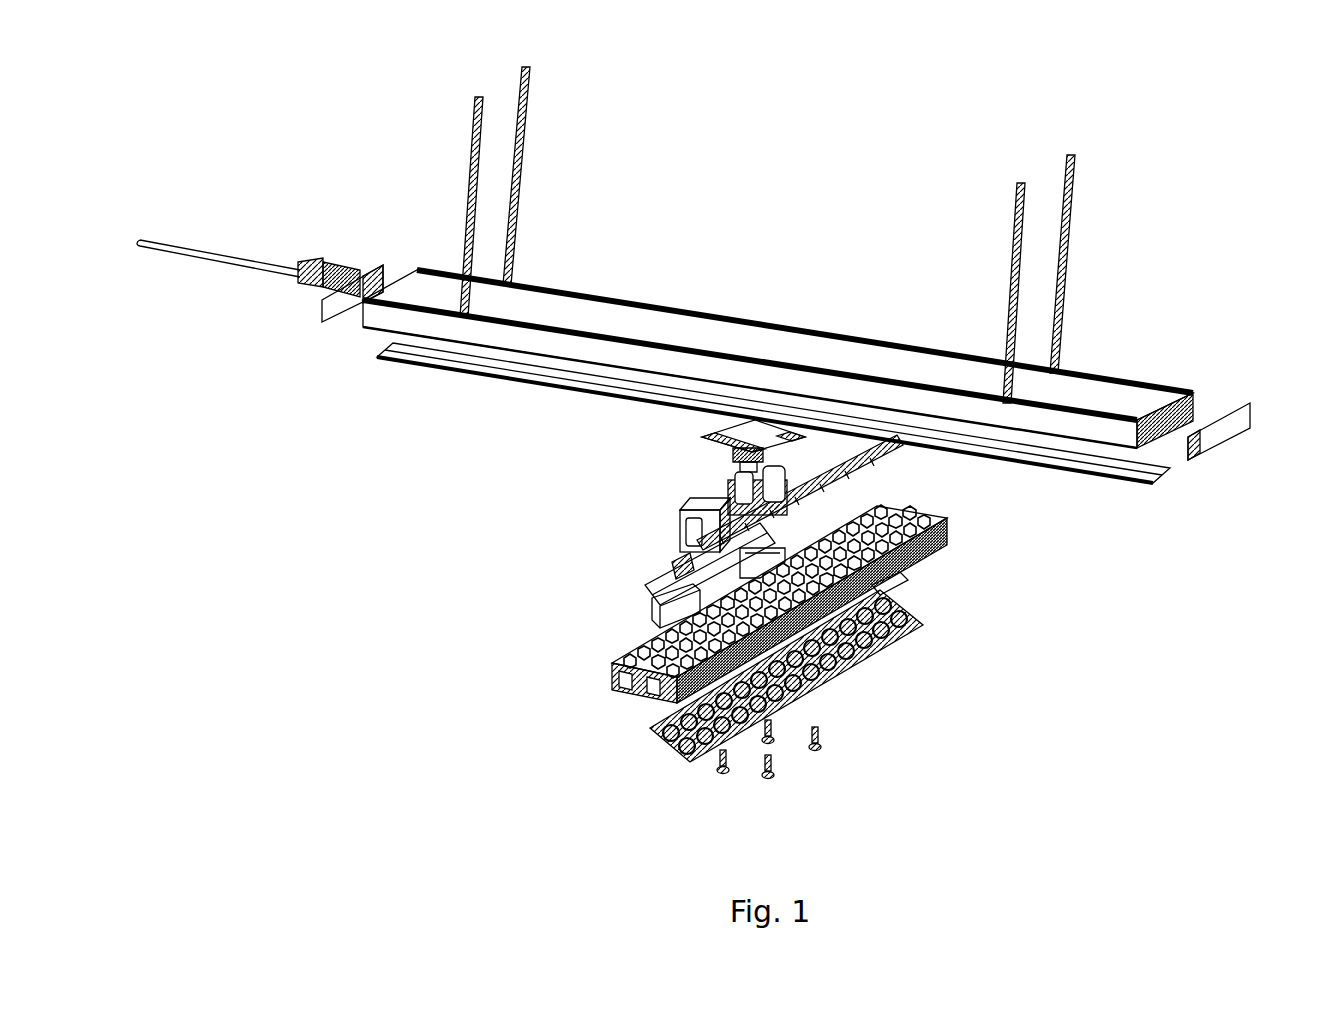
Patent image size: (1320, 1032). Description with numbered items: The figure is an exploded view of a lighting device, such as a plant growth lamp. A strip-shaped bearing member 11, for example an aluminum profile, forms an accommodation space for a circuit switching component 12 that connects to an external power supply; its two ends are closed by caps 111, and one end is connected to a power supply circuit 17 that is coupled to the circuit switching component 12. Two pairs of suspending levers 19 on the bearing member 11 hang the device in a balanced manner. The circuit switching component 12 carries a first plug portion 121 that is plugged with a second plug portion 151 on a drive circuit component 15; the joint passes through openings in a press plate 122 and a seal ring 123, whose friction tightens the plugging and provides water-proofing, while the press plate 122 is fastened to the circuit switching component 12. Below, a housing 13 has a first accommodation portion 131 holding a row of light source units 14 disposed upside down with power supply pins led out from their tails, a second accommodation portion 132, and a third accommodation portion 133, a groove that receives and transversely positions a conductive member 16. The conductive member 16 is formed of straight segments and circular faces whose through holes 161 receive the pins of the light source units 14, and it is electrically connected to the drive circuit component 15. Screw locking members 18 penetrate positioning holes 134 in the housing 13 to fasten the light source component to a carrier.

The bearing member 11 is at (778, 322).
The cap 111 is at (370, 266).
The circuit switching component 12 is at (1038, 470).
The first plug portion 121 is at (708, 430).
The press plate 122 is at (732, 452).
The seal ring 123 is at (790, 456).
The housing 13 is at (777, 613).
The first accommodation portion 131 is at (616, 702).
The second accommodation portion 132 is at (778, 550).
The third accommodation portion 133 is at (624, 655).
The positioning hole 134 is at (676, 606).
The light source unit 14 is at (935, 615).
The drive circuit component 15 is at (680, 532).
The second plug portion 151 is at (727, 487).
The conductive member 16 is at (656, 582).
The through hole 161 is at (674, 566).
The power supply circuit 17 is at (268, 246).
The screw locking member 18 is at (826, 752).
The suspending lever 19 is at (480, 93).